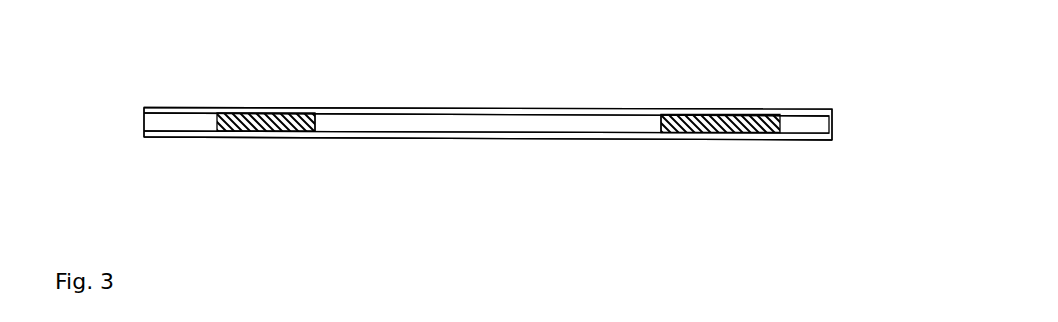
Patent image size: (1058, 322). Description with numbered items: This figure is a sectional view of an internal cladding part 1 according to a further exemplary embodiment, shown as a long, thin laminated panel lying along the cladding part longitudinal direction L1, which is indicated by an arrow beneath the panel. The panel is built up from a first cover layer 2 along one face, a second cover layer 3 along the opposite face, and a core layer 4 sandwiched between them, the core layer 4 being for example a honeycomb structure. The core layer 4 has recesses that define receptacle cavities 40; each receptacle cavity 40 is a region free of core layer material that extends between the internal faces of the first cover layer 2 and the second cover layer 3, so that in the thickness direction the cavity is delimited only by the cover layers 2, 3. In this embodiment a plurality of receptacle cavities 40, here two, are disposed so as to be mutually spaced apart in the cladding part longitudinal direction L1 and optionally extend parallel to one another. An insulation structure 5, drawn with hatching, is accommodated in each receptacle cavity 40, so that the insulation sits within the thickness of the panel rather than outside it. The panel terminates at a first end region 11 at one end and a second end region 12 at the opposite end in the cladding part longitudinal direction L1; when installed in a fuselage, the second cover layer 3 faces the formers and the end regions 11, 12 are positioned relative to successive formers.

The internal cladding part 1 is at (791, 81).
The first cover layer 2 is at (820, 141).
The second cover layer 3 is at (830, 111).
The core layer 4 is at (558, 122).
The insulation structure 5 is at (267, 118).
The first end region 11 is at (144, 141).
The second end region 12 is at (799, 142).
The receptacle cavity 40 is at (327, 127).
The cladding part longitudinal direction L1 is at (503, 239).